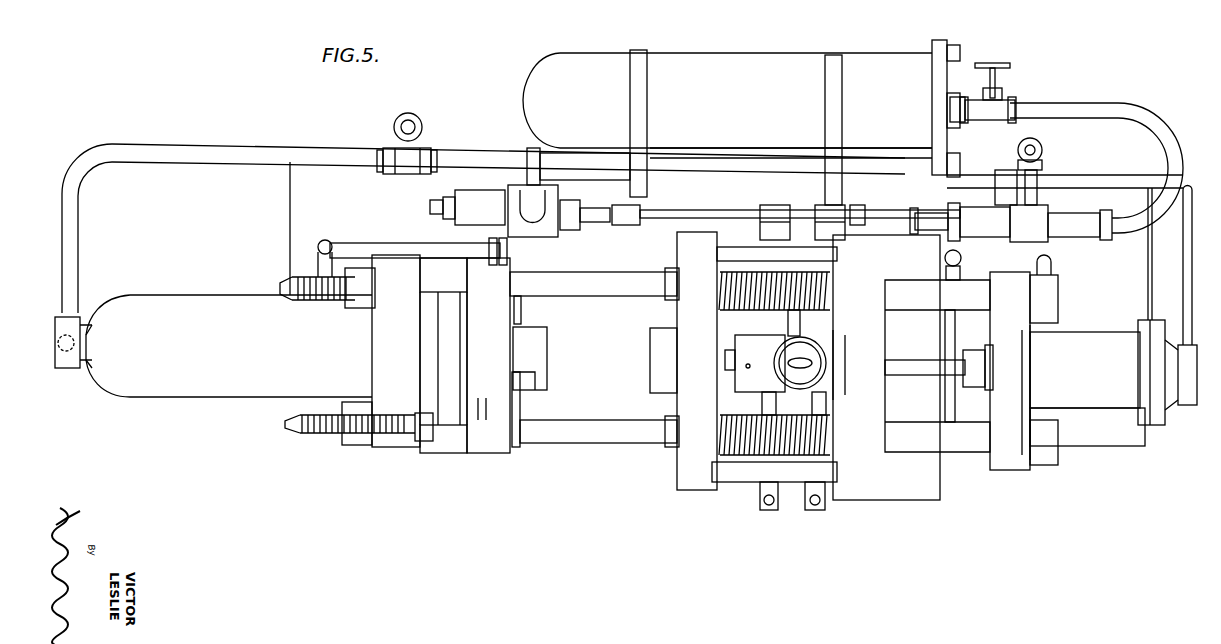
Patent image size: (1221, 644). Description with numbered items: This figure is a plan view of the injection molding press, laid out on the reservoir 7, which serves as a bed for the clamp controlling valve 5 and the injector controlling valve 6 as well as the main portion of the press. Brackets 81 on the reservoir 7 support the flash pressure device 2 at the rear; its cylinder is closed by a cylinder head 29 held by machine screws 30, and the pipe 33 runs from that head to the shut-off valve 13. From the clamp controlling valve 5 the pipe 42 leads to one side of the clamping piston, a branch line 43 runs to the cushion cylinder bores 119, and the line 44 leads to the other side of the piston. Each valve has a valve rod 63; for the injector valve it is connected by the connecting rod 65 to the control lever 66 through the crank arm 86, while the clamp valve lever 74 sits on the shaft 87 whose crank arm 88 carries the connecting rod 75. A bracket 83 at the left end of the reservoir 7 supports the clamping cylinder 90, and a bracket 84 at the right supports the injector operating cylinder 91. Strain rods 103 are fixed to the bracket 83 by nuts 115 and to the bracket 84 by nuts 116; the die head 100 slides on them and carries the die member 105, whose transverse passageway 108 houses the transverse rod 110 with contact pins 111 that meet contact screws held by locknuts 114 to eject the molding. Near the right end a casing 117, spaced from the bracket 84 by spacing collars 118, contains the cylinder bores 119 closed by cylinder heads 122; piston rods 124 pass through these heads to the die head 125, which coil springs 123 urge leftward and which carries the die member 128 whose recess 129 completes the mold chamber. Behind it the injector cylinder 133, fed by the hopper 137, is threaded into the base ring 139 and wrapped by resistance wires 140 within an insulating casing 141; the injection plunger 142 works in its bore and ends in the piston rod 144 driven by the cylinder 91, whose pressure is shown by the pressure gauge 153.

The flash pressure device 2 is at (686, 56).
The clamp controlling valve 5 is at (575, 230).
The injector controlling valve 6 is at (982, 207).
The reservoir 7 is at (290, 213).
The shut-off valve 13 is at (1008, 68).
The cylinder head 29 is at (940, 40).
The machine screws 30 is at (960, 55).
The pipe 33 is at (1112, 108).
The pipe 42 is at (190, 148).
The branch line 43 is at (956, 345).
The line 44 is at (383, 243).
The valve rod 63 is at (932, 213).
The connecting rod 65 is at (858, 205).
The control lever 66 is at (815, 510).
The control lever 74 is at (768, 510).
The connecting rod 75 is at (712, 210).
The brackets 81 is at (638, 50).
The bracket 83 is at (372, 326).
The bracket 84 is at (1022, 360).
The crank arm 86 is at (832, 210).
The shaft 87 is at (788, 323).
The crank arm 88 is at (780, 210).
The clamping cylinder 90 is at (160, 305).
The injector operating cylinder 91 is at (1088, 342).
The die head 100 is at (476, 453).
The strain rods 103 is at (605, 280).
The die member 105 is at (547, 330).
The transverse passageway 108 is at (546, 380).
The transverse rod 110 is at (522, 318).
The contact pins 111 is at (480, 398).
The locknuts 114 is at (490, 250).
The nuts 115 is at (360, 278).
The nuts 116 is at (1052, 300).
The casing 117 is at (872, 344).
The spacing collars 118 is at (982, 304).
The cylinder bores 119 is at (308, 268).
The cylinder heads 122 is at (835, 255).
The coil springs 123 is at (740, 272).
The piston rods 124 is at (735, 247).
The die head 125 is at (690, 490).
The die member 128 is at (652, 335).
The recess 129 is at (718, 437).
The injector cylinder 133 is at (730, 350).
The hopper 137 is at (806, 337).
The base ring 139 is at (836, 345).
The resistance wires 140 is at (746, 362).
The insulating casing 141 is at (764, 390).
The injection plunger 142 is at (924, 354).
The piston rod 144 is at (968, 388).
The pressure gauge 153 is at (1188, 405).